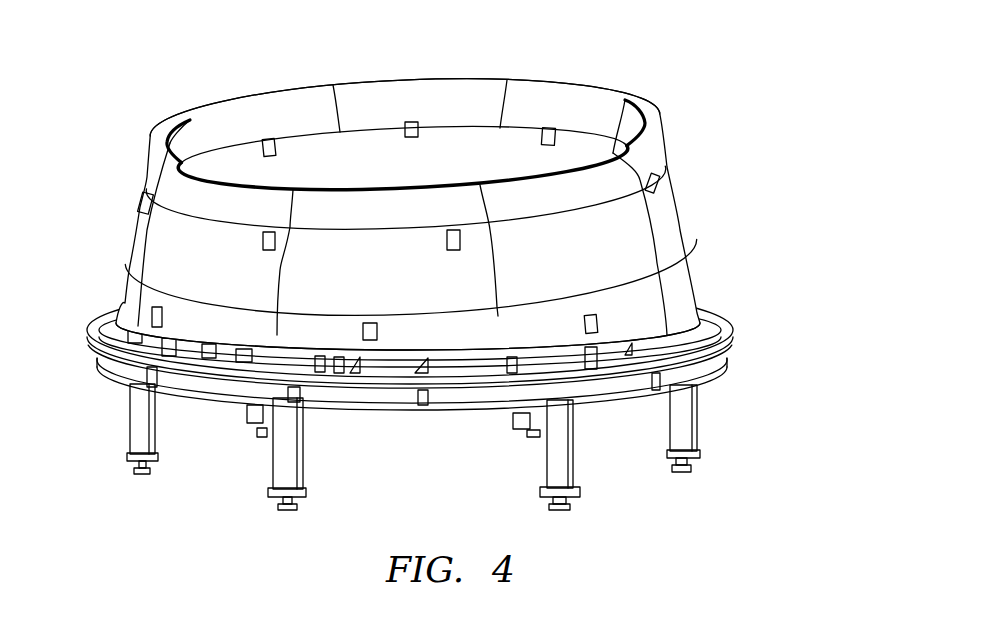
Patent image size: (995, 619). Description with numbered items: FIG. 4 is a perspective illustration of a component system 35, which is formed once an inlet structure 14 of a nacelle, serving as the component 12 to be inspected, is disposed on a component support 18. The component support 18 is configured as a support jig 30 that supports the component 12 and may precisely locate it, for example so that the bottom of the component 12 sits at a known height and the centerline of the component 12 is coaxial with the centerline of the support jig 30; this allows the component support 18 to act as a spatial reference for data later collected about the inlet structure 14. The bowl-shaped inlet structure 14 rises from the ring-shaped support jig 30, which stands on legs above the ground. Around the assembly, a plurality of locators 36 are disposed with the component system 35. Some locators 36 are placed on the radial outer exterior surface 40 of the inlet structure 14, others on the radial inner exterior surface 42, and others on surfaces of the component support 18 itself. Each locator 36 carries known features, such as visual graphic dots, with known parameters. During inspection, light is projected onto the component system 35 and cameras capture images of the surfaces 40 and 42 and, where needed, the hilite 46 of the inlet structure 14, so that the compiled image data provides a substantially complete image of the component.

The component 12 is at (461, 209).
The inlet structure 14 is at (461, 209).
The component support 18 is at (484, 396).
The support jig 30 is at (740, 353).
The component system 35 is at (740, 137).
The locator 36 is at (268, 139).
The radial outer exterior surface 40 is at (163, 273).
The radial inner exterior surface 42 is at (463, 143).
The hilite 46 is at (320, 80).